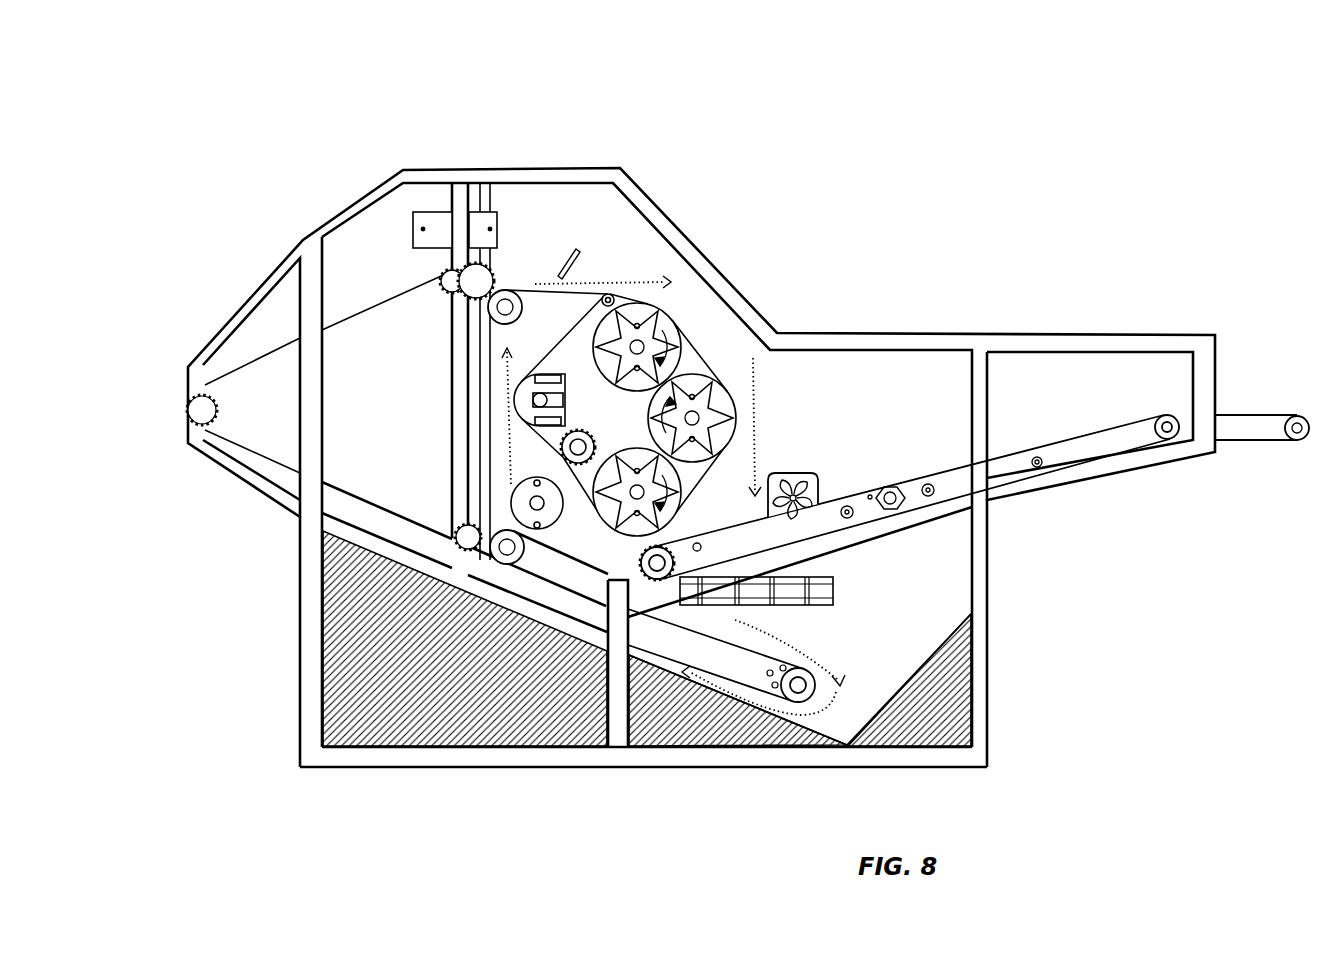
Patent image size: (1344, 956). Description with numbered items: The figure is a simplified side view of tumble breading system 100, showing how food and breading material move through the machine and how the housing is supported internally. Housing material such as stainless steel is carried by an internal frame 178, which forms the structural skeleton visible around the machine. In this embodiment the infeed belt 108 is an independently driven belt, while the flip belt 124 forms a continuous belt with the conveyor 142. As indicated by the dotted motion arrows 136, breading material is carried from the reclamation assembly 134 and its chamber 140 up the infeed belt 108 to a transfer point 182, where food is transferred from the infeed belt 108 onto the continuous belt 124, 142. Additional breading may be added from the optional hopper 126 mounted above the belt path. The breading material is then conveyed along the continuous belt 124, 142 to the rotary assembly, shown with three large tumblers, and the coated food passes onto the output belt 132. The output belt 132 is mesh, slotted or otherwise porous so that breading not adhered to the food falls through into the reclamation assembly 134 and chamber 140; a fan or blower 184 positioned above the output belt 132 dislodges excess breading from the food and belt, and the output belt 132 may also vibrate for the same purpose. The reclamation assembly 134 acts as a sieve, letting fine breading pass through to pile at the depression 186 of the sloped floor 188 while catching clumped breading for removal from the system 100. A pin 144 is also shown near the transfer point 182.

The tumble breading assembly 100 is at (262, 143).
The infeed belt 108 is at (290, 347).
The flip belt 124 is at (458, 373).
The conveyor 142 is at (458, 373).
The hopper 126 is at (477, 213).
The output belt 132 is at (1275, 442).
The reclamation assembly 134 is at (806, 591).
The chamber 140 is at (835, 588).
The motion arrows 136 is at (622, 280).
The pin 144 is at (568, 258).
The internal frame 178 is at (553, 765).
The transfer point 182 is at (504, 285).
The fan or blower 184 is at (800, 478).
The depression 186 is at (847, 750).
The sloped floor 188 is at (330, 627).